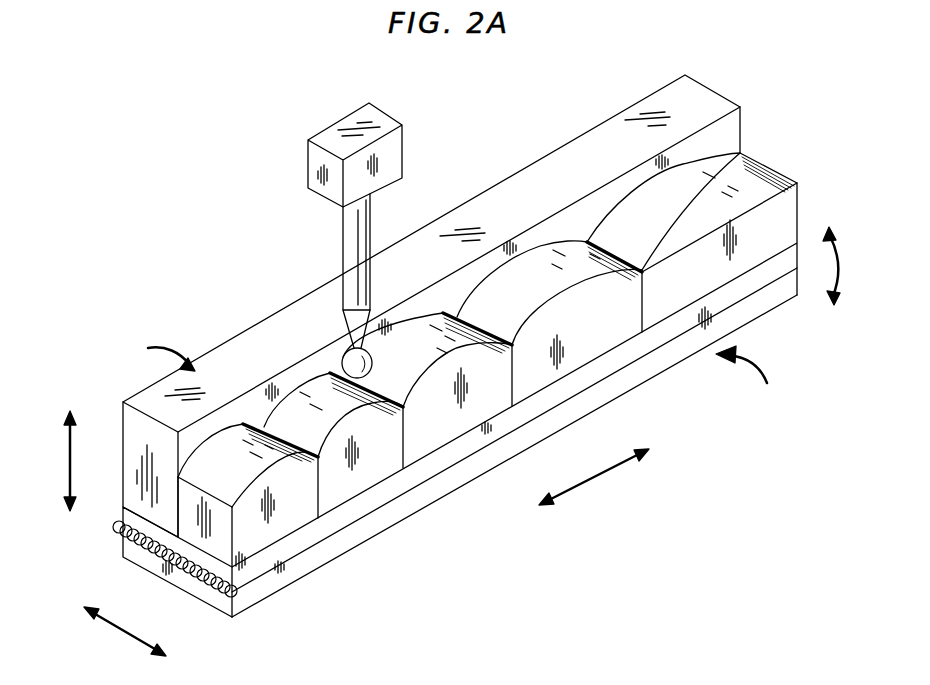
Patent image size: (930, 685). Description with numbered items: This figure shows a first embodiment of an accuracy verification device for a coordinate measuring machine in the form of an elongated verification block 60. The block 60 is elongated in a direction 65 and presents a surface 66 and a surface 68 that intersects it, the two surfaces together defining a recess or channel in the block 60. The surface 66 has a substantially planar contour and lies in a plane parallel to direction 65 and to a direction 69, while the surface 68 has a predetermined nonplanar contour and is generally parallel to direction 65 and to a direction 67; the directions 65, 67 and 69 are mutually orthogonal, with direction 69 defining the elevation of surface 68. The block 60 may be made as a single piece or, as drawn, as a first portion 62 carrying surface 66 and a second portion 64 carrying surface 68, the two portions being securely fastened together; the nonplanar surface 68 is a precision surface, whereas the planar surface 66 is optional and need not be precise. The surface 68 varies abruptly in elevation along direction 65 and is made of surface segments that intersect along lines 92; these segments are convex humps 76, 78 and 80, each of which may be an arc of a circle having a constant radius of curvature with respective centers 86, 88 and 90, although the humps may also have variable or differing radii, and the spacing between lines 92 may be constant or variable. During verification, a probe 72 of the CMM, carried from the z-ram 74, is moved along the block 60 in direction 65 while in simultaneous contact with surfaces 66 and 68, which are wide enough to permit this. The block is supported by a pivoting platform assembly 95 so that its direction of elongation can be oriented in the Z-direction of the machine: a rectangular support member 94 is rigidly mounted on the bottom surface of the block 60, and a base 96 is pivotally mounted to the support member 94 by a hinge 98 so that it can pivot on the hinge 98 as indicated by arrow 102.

The verification block 60 is at (154, 355).
The first portion 62 is at (137, 445).
The second portion 64 is at (196, 520).
The direction 65 is at (597, 478).
The surface 66 is at (733, 128).
The direction 67 is at (130, 645).
The surface 68 is at (222, 445).
The direction 69 is at (66, 442).
The probe 72 is at (343, 345).
The z-ram 74 is at (403, 147).
The convex hump 76 is at (305, 390).
The convex hump 78 is at (417, 327).
The convex hump 80 is at (568, 278).
The center 86 is at (382, 460).
The center 88 is at (450, 422).
The center 90 is at (585, 347).
The lines 92 is at (473, 323).
The rectangular support member 94 is at (302, 543).
The pivoting platform assembly 95 is at (754, 377).
The base 96 is at (357, 537).
The hinge 98 is at (215, 587).
The arrow 102 is at (839, 265).